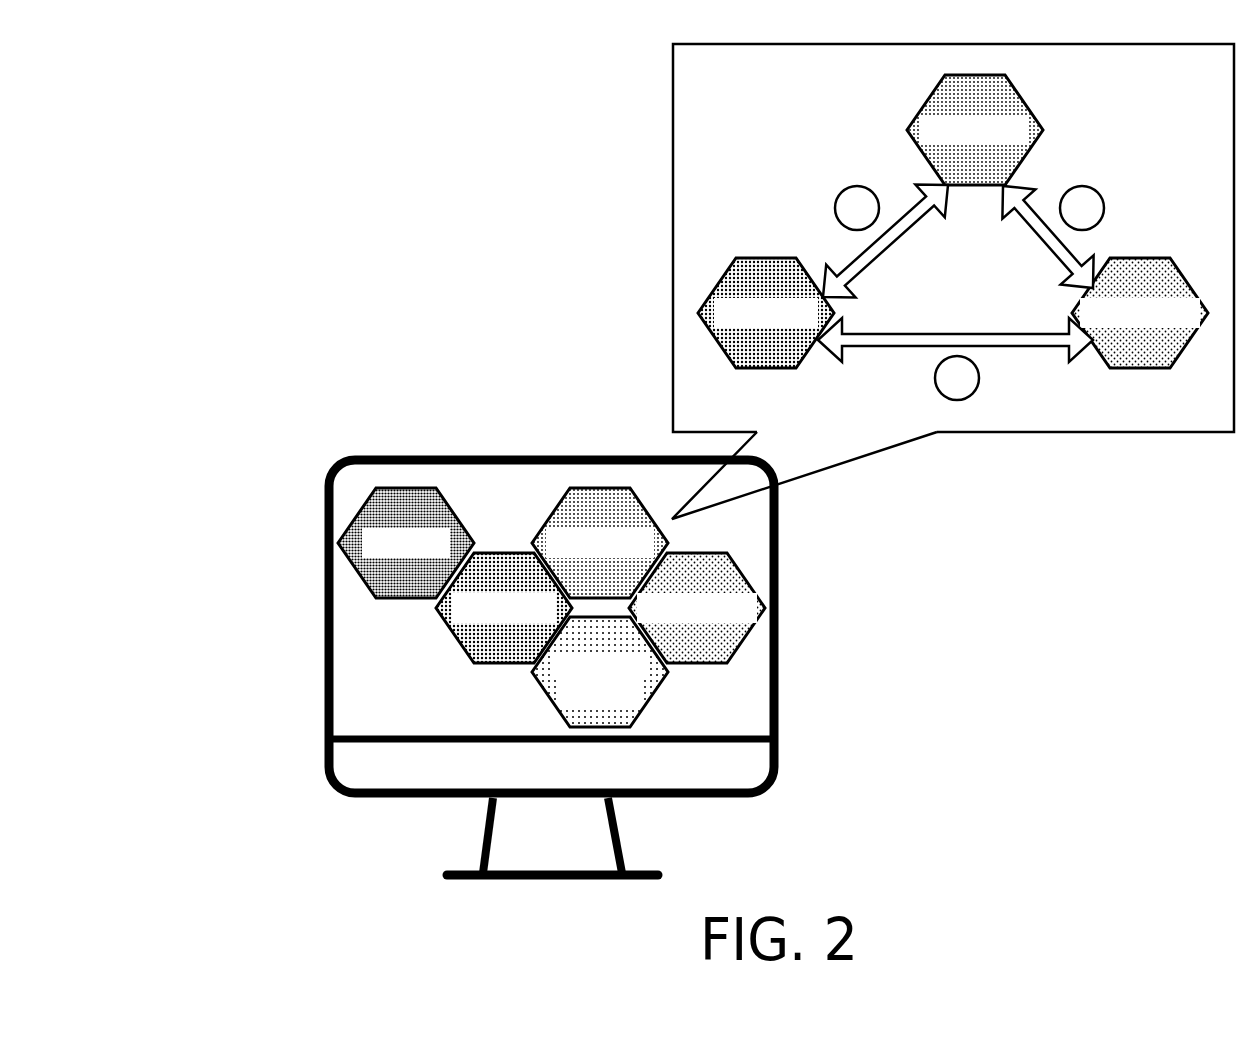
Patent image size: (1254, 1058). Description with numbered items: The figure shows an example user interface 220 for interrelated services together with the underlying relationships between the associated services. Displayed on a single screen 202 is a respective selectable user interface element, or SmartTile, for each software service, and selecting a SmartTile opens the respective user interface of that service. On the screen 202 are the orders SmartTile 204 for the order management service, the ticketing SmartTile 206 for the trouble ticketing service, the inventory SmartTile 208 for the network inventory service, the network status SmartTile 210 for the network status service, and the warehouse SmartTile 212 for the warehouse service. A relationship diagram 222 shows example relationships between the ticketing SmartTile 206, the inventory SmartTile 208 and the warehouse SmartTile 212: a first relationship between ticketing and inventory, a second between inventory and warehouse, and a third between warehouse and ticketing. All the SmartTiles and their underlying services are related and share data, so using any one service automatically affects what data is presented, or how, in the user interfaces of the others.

The screen 202 is at (395, 633).
The orders SmartTile 204 is at (380, 517).
The ticketing SmartTile 206 is at (505, 582).
The inventory SmartTile 208 is at (605, 515).
The network status SmartTile 210 is at (652, 685).
The warehouse SmartTile 212 is at (698, 571).
The user interface 220 is at (312, 518).
The relationship diagram 222 is at (672, 232).